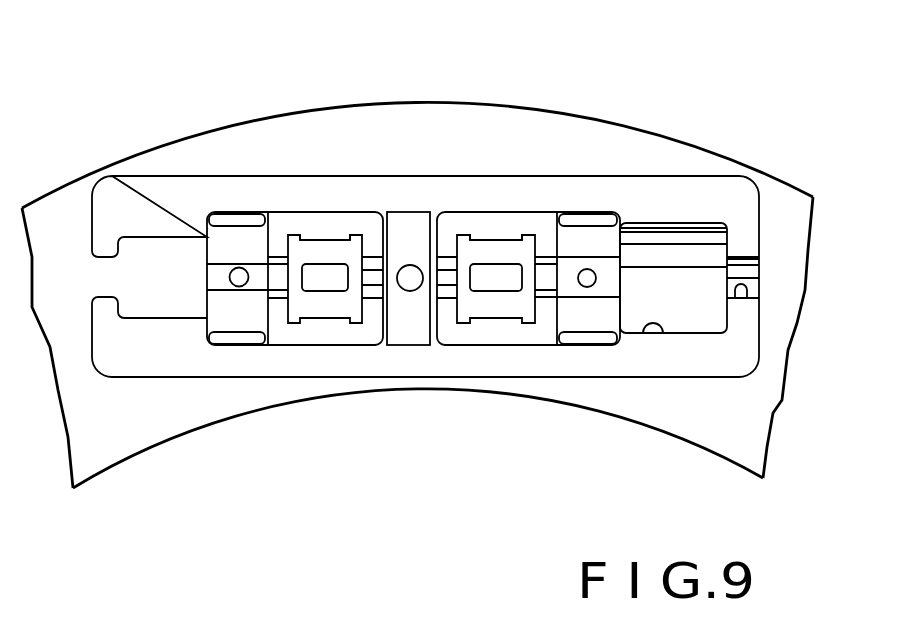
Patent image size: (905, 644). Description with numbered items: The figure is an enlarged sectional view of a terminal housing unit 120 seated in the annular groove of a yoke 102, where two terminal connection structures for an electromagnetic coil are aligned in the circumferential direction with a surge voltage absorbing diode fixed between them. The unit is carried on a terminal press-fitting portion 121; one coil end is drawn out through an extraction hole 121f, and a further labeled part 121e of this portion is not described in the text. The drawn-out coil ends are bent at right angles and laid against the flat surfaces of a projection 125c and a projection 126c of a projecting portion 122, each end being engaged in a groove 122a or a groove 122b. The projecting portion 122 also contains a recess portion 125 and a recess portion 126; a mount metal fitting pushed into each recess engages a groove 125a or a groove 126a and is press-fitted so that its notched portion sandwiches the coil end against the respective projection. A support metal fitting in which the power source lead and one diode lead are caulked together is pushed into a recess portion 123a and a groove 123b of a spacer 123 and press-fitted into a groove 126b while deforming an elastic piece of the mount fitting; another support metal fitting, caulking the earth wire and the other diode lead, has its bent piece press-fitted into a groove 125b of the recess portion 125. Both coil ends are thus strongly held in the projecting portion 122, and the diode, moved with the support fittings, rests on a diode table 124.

The yoke 102 is at (706, 133).
The terminal housing unit 120 is at (418, 269).
The terminal press-fitting portion 121 is at (225, 364).
The positioning pin 121e is at (597, 278).
The extraction hole 121f is at (230, 283).
The projecting portion 122 is at (378, 204).
The groove 122a is at (258, 282).
The groove 122b is at (567, 280).
The spacer 123 is at (711, 313).
The recess portion 123a is at (660, 325).
The groove 123b is at (743, 296).
The diode table 124 is at (403, 327).
The recess portion 125 is at (323, 296).
The groove 125a is at (360, 233).
The groove 125b is at (293, 233).
The projection 125c is at (330, 278).
The recess portion 126 is at (516, 280).
The groove 126a is at (462, 233).
The groove 126b is at (530, 235).
The projection 126c is at (508, 280).